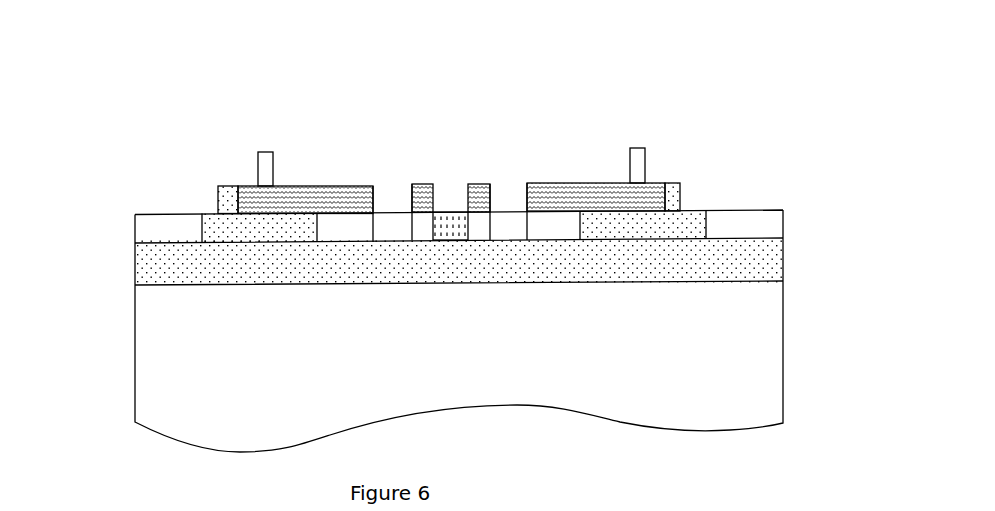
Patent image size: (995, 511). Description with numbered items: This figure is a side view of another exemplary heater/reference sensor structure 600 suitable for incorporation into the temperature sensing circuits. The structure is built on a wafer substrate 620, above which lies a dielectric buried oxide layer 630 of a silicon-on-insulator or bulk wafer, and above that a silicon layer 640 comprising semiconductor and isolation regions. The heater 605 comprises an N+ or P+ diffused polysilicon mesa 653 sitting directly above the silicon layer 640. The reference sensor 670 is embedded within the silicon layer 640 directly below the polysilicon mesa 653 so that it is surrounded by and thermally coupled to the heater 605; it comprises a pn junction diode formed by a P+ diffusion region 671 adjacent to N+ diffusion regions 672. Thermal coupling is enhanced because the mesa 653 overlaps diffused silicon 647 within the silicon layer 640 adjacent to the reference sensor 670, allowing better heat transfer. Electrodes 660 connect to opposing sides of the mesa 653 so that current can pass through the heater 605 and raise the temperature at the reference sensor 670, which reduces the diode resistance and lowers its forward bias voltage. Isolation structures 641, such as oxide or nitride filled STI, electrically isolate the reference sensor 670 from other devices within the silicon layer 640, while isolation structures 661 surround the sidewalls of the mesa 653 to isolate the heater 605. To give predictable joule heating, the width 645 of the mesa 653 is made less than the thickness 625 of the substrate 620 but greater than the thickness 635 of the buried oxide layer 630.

The heater/reference sensor structure 600 is at (130, 68).
The heater 605 is at (227, 62).
The width 645 is at (230, 88).
The reference sensor 670 is at (378, 140).
The polysilicon mesa 653 is at (318, 185).
The electrodes 660 is at (645, 163).
The isolation structures 661 is at (683, 207).
The isolation structures 641 is at (185, 213).
The silicon layer 640 is at (122, 223).
The thickness of the buried oxide layer 635 is at (105, 243).
The thickness of the substrate 625 is at (124, 298).
The diffused silicon 647 is at (353, 241).
The wafer substrate 620 is at (456, 365).
The buried oxide layer 630 is at (783, 255).
The N+ diffusion regions 672 is at (397, 213).
The P+ diffusion region 671 is at (447, 212).